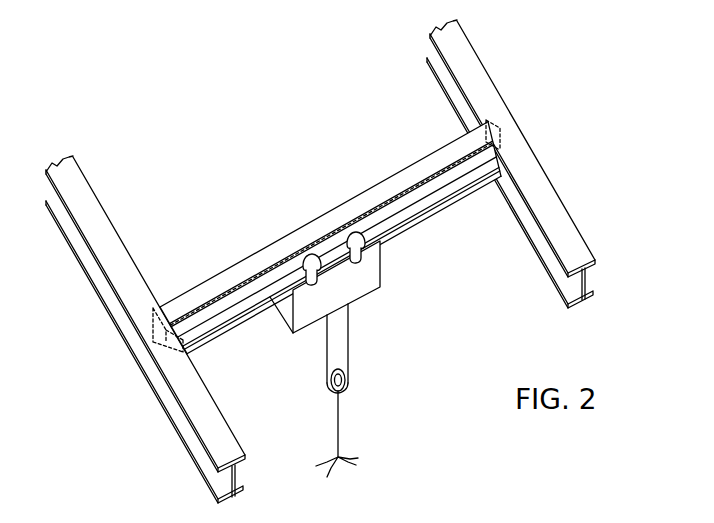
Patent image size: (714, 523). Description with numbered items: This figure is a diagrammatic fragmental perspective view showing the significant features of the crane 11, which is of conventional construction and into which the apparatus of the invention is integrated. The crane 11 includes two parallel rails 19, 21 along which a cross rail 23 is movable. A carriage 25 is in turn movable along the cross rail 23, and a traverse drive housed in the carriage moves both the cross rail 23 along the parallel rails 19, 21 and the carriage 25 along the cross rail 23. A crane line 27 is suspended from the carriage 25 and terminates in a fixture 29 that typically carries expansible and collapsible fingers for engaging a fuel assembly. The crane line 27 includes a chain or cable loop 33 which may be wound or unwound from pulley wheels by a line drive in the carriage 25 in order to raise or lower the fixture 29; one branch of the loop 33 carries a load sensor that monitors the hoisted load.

The crane 11 is at (325, 261).
The parallel rail 19 is at (565, 207).
The parallel rail 21 is at (226, 415).
The cross rail 23 is at (230, 266).
The carriage 25 is at (283, 314).
The crane line 27 is at (340, 413).
The fixture 29 is at (352, 461).
The chain or cable loop 33 is at (349, 325).